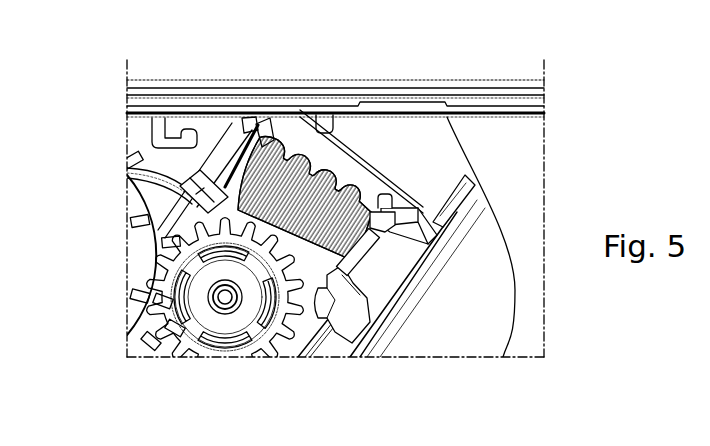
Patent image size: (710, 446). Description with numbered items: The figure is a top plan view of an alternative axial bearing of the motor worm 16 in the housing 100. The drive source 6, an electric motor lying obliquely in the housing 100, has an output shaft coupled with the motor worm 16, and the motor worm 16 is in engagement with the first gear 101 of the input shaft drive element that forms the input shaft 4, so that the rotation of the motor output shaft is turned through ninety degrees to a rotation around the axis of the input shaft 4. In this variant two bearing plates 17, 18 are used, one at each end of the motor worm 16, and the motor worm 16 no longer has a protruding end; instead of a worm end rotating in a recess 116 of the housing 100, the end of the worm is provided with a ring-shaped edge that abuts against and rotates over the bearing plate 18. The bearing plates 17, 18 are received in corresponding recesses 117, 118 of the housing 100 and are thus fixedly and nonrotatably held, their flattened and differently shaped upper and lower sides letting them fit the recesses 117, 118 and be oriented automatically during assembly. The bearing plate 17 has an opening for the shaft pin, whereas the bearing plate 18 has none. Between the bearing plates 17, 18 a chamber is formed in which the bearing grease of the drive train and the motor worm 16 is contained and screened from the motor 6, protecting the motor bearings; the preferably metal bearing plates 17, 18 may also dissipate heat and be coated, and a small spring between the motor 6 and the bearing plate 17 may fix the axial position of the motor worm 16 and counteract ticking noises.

The input shaft 4 is at (227, 323).
The drive source 6 is at (452, 313).
The motor worm 16 is at (345, 160).
The bearing plate 17 is at (398, 208).
The bearing plate 18 is at (237, 160).
The housing 100 is at (162, 160).
The first gear 101 is at (180, 333).
The recess 116 is at (243, 118).
The recess 117 is at (468, 185).
The recess 118 is at (266, 126).